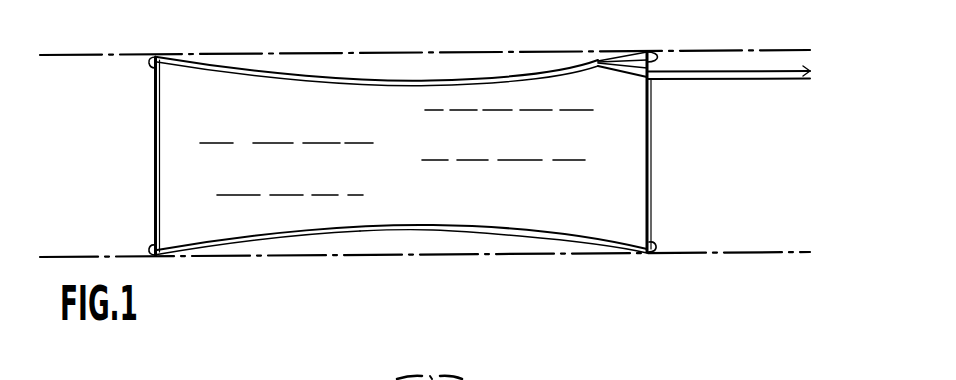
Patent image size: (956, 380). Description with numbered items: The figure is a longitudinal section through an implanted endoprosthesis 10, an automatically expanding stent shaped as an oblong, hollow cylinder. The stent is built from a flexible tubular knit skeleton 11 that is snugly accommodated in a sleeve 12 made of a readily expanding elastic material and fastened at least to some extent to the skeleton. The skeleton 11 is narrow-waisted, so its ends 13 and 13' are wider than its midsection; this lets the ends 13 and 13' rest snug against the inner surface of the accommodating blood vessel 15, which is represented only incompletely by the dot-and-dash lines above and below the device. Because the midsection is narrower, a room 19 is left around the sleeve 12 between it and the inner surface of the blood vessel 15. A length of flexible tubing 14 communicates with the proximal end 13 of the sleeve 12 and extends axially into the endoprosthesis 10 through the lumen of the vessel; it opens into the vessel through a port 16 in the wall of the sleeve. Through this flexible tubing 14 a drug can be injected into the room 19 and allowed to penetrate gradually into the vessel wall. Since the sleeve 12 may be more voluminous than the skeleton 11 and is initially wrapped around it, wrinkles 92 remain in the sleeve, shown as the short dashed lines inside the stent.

The endoprosthesis 10 is at (446, 155).
The skeleton 11 is at (506, 220).
The sleeve 12 is at (530, 238).
The proximal end 13 is at (667, 152).
The end 13' is at (135, 156).
The flexible tubing 14 is at (770, 80).
The blood vessel 15 is at (778, 259).
The port 16 is at (598, 61).
The room 19 is at (358, 242).
The wrinkles 92 is at (268, 142).